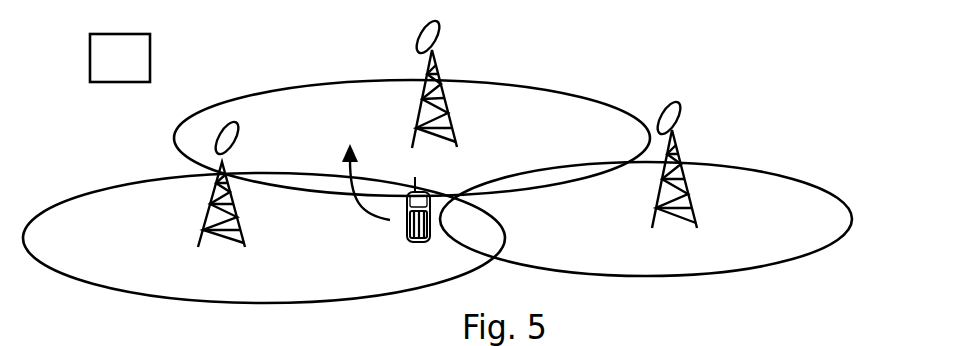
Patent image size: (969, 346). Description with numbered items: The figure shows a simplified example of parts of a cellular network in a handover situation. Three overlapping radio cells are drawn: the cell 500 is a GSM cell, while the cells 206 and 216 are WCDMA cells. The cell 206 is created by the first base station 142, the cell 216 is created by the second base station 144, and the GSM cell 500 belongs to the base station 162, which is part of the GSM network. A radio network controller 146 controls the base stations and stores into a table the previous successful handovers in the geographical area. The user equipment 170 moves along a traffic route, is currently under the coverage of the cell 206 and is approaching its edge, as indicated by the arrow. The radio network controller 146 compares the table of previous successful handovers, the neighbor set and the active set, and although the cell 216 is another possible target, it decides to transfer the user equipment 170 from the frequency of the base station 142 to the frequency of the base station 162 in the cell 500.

The radio network controller 146 is at (150, 43).
The GSM cell 500 is at (562, 88).
The base station 162 is at (448, 98).
The first base station 142 is at (208, 198).
The second base station 144 is at (688, 180).
The user equipment 170 is at (407, 227).
The radio cell 206 is at (110, 290).
The radio cell 216 is at (757, 270).